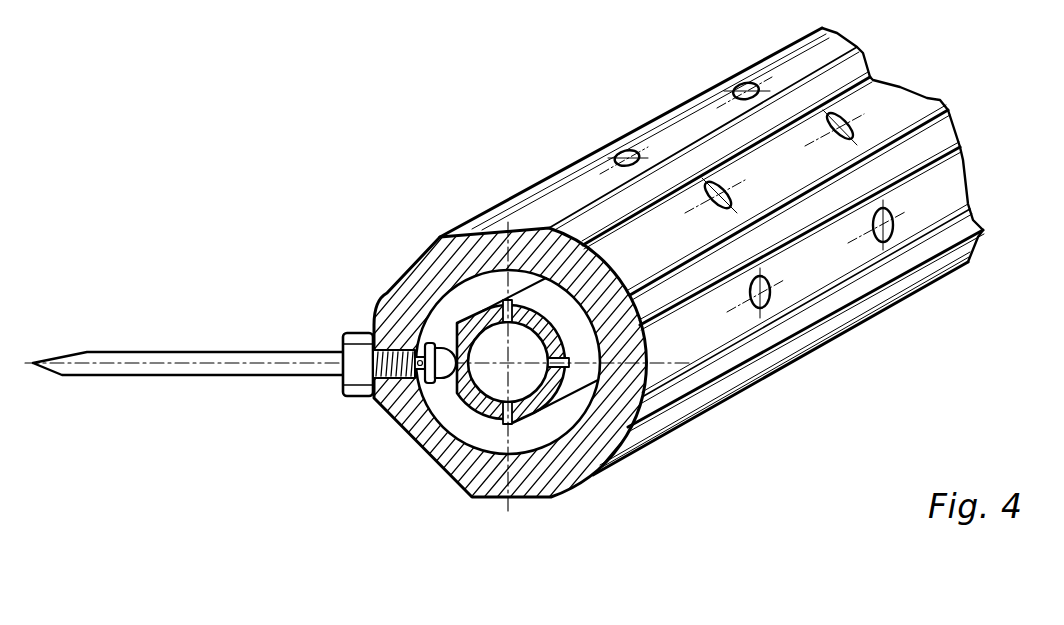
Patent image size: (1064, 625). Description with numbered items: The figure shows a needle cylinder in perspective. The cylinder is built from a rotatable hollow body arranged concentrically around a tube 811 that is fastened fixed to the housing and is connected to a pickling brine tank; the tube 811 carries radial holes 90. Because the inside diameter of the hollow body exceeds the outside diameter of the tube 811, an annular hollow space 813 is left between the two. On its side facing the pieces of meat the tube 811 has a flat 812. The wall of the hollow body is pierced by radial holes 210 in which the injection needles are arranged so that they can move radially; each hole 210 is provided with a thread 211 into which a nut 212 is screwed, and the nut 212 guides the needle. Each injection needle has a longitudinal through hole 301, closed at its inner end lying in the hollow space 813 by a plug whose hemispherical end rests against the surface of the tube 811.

The radial holes 210 is at (620, 152).
The thread 211 is at (373, 333).
The nuts 212 is at (343, 395).
The longitudinal through hole 301 is at (172, 362).
The tube 811 is at (543, 415).
The flat 812 is at (446, 347).
The hollow space 813 is at (480, 440).
The radial holes 90 is at (514, 425).